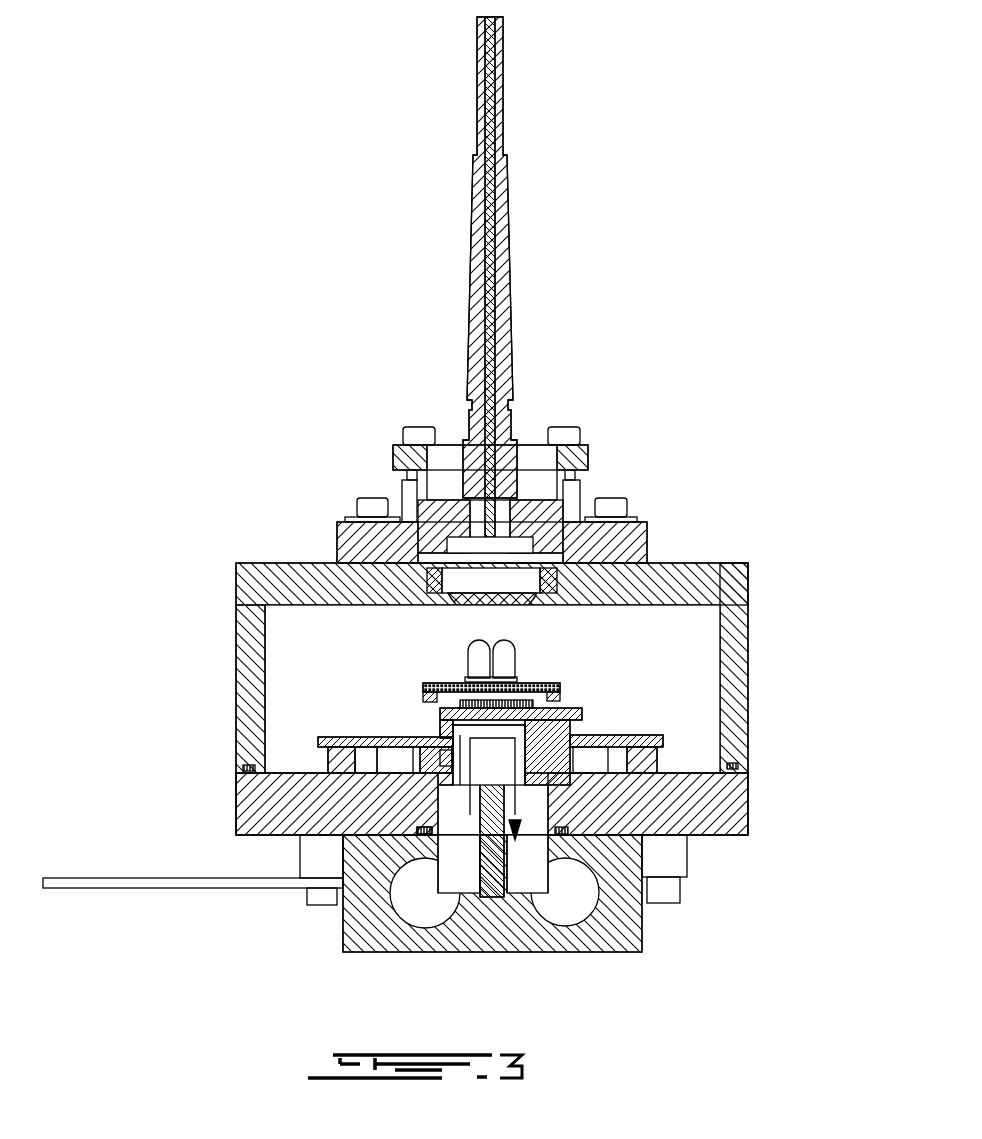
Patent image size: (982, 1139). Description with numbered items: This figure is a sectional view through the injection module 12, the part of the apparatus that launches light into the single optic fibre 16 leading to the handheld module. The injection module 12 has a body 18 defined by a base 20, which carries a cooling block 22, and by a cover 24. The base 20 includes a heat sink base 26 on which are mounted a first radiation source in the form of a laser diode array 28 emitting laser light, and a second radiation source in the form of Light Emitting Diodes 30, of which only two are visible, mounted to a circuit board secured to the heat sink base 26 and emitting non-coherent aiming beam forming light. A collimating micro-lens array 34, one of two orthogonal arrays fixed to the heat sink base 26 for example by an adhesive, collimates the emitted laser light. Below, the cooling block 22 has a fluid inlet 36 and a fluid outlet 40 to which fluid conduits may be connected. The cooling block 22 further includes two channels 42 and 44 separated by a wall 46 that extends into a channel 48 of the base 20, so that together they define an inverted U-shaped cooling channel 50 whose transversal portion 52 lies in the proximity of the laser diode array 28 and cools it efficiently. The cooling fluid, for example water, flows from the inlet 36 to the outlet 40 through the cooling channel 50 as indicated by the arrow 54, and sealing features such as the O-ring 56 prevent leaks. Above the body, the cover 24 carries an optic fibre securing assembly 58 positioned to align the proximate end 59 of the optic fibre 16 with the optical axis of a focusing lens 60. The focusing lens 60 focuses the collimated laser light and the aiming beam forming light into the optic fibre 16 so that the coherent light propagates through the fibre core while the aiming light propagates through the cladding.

The injection module 12 is at (222, 450).
The optic fibre 16 is at (503, 117).
The body 18 is at (762, 636).
The base 20 is at (740, 820).
The cooling block 22 is at (657, 934).
The cover 24 is at (234, 639).
The heat sink base 26 is at (440, 720).
The laser diode array 28 is at (522, 722).
The Light Emitting Diodes 30 is at (508, 648).
The collimating micro-lens array 34 is at (423, 685).
The fluid inlet 36 is at (430, 898).
The fluid outlet 40 is at (568, 900).
The channel 42 is at (465, 858).
The channel 44 is at (522, 865).
The wall 46 is at (520, 800).
The channel of the base 48 is at (453, 753).
The cooling channel 50 is at (567, 707).
The transversal portion 52 is at (453, 738).
The arrow 54 is at (627, 738).
The O-ring 56 is at (417, 833).
The optic fibre securing assembly 58 is at (602, 447).
The proximate end 59 is at (488, 548).
The focusing lens 60 is at (603, 553).